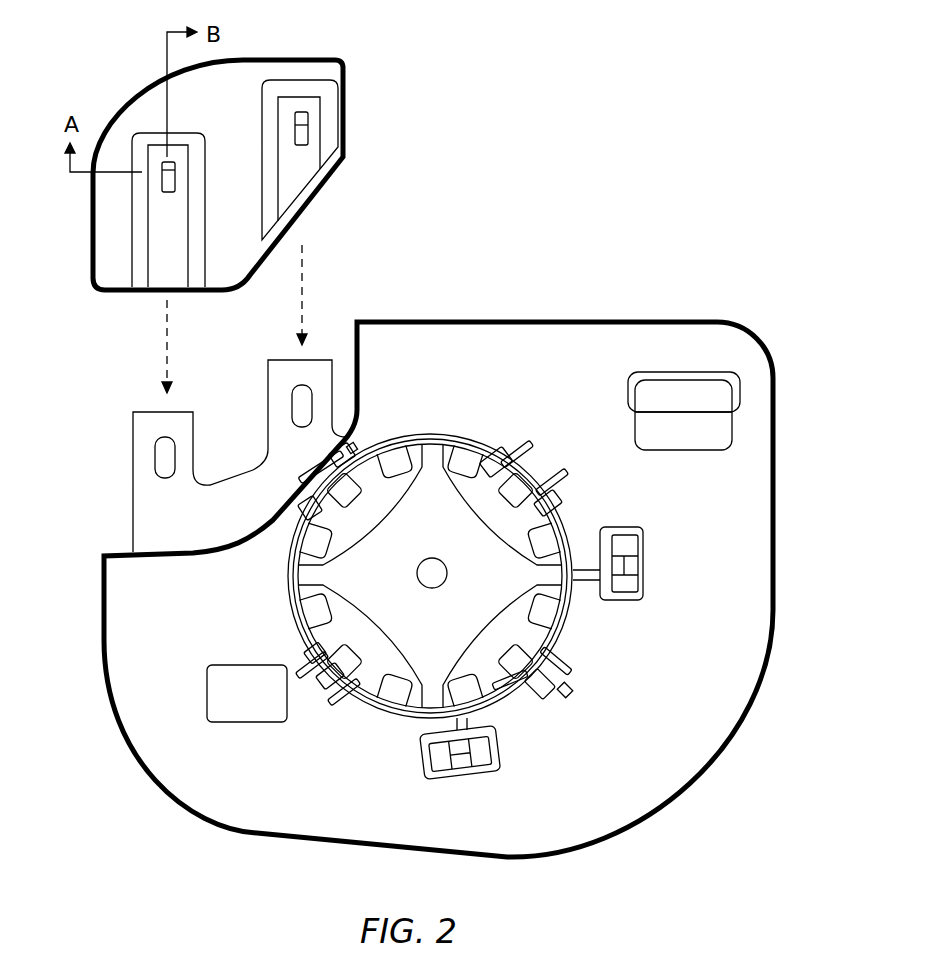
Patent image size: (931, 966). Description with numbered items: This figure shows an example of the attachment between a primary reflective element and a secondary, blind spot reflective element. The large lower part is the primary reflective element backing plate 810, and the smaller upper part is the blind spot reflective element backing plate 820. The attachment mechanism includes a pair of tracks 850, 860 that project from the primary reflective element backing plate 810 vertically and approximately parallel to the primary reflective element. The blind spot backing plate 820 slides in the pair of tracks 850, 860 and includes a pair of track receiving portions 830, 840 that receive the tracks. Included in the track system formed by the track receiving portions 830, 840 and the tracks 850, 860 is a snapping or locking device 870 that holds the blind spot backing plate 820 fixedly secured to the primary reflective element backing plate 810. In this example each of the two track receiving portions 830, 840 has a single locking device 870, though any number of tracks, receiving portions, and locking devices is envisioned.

The primary reflective element backing plate 810 is at (527, 343).
The blind spot reflective element backing plate 820 is at (247, 77).
The track receiving portion 830 is at (150, 132).
The track receiving portion 840 is at (308, 80).
The track 850 is at (132, 453).
The track 860 is at (268, 380).
The locking device 870 is at (170, 183).